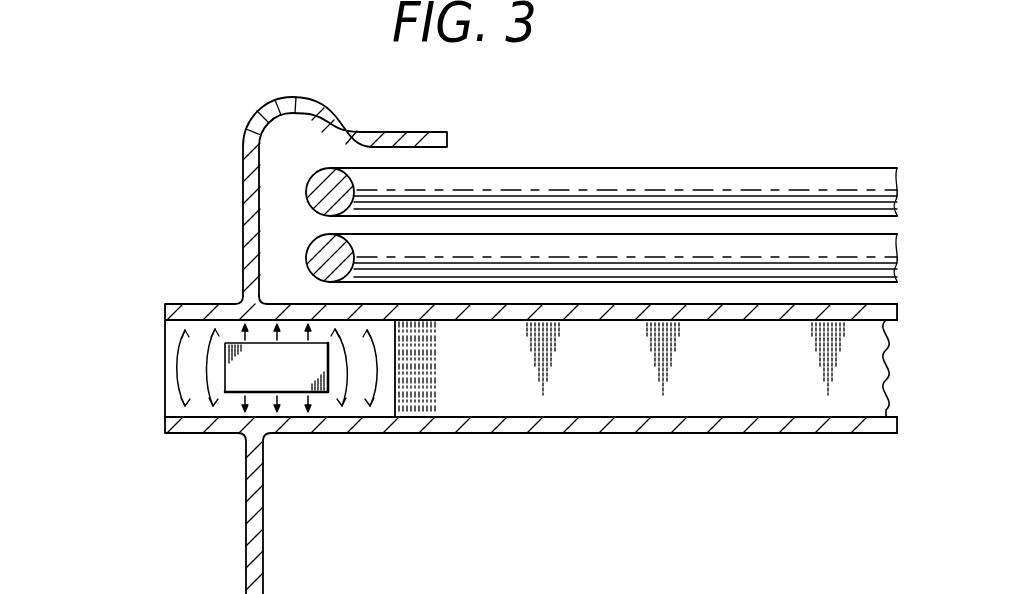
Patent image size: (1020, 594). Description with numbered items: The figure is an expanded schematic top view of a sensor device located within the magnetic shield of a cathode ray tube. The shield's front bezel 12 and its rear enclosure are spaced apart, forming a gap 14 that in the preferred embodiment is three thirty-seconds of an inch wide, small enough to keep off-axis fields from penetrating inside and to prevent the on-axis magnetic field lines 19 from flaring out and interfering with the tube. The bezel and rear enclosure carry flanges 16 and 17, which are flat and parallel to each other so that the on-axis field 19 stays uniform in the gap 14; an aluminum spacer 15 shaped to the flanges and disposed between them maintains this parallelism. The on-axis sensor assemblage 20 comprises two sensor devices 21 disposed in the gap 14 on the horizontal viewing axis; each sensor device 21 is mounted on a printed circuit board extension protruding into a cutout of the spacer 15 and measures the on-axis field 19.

The front bezel 12 is at (299, 96).
The gap 14 is at (173, 342).
The aluminum spacer 15 is at (732, 387).
The flange 16 is at (207, 303).
The flange 17 is at (200, 434).
The on-axis magnetic field lines 19 is at (380, 372).
The on-axis sensor assemblage 20 is at (135, 358).
The sensor device 21 is at (226, 371).